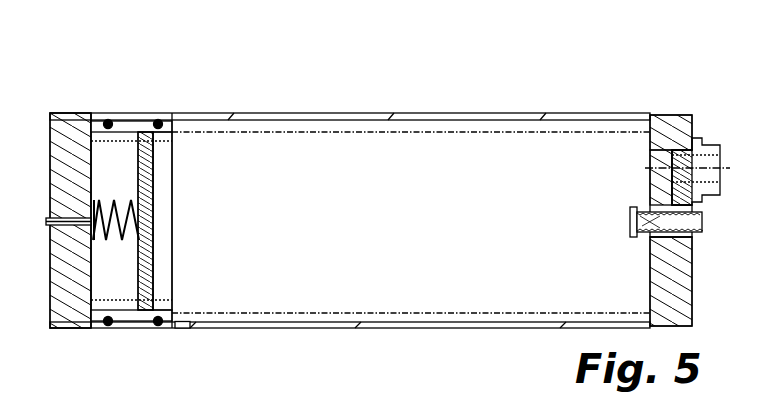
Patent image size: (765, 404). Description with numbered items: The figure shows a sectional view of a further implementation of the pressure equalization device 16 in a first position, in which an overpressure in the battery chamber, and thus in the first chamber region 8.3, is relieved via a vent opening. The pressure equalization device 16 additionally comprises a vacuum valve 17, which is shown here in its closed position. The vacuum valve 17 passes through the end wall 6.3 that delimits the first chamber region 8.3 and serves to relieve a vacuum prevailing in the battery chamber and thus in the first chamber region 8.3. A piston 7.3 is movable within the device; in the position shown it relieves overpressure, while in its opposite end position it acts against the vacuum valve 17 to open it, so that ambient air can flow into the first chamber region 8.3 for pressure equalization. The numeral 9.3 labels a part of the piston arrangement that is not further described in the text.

The pressure equalization device 16 is at (489, 103).
The first chamber region 8.3 is at (431, 236).
The piston 9.3 is at (113, 164).
The piston 7.3 is at (167, 192).
The end wall 6.3 is at (643, 261).
The vacuum valve 17 is at (646, 196).